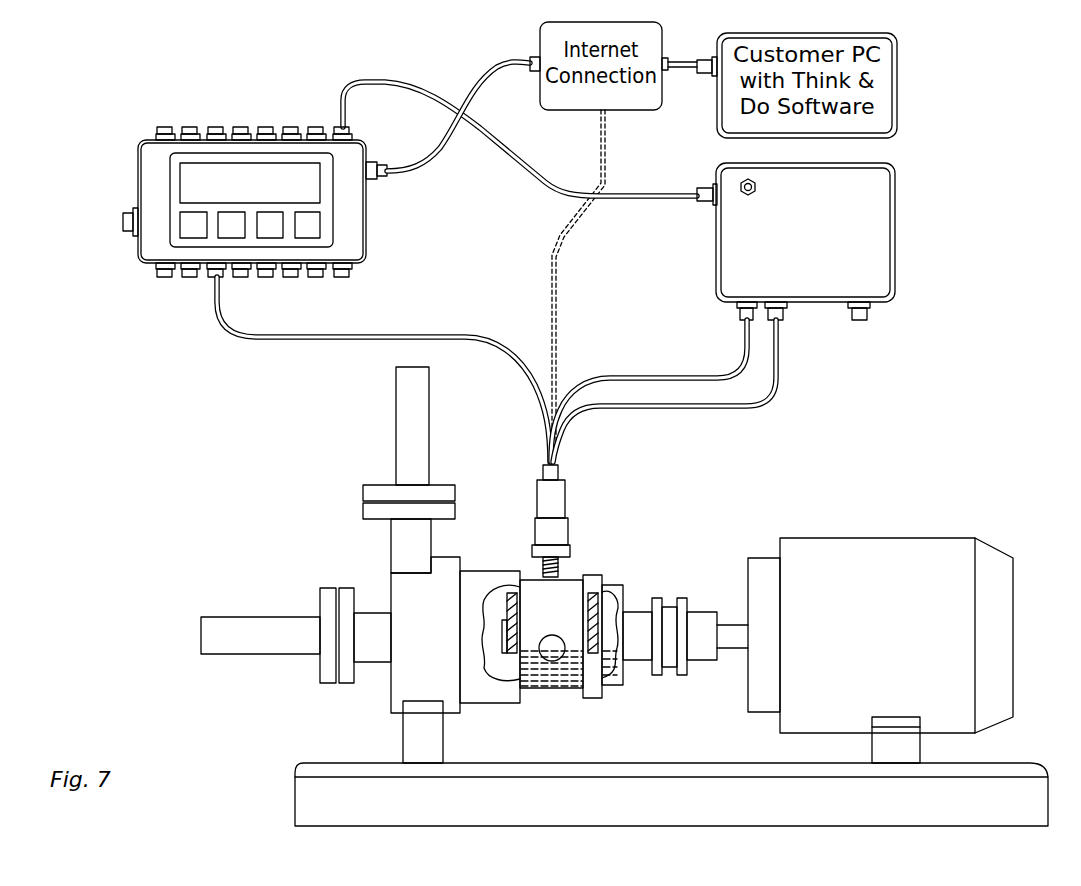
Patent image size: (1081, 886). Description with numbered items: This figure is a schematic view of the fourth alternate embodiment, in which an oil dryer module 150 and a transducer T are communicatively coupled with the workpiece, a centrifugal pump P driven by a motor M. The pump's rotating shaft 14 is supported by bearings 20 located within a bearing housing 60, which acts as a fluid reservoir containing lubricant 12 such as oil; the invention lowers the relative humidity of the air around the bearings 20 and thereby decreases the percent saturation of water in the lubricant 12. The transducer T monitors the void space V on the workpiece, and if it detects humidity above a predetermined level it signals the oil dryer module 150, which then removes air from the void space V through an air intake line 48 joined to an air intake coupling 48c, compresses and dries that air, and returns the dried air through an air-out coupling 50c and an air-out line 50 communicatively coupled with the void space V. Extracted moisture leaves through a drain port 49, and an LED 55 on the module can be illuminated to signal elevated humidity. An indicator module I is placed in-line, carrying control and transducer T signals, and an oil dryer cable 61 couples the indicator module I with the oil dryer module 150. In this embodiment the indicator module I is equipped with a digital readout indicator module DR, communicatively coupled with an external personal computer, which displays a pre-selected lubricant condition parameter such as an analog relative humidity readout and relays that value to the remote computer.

The lubricant 12 is at (553, 686).
The shaft 14 is at (737, 648).
The bearings 20 is at (506, 590).
The air intake line 48 is at (650, 376).
The air intake coupling 48c is at (740, 322).
The drain port 49 is at (858, 322).
The air-out line 50 is at (722, 409).
The air-out coupling 50c is at (785, 320).
The LED 55 is at (747, 196).
The bearing housing 60 is at (568, 592).
The oil dryer cable 61 is at (530, 160).
The oil dryer module 150 is at (880, 215).
The digital readout indicator module DR is at (348, 168).
The indicator module I is at (370, 237).
The motor M is at (1017, 643).
The centrifugal pump P is at (397, 688).
The transducer T is at (562, 505).
The void space V is at (528, 580).